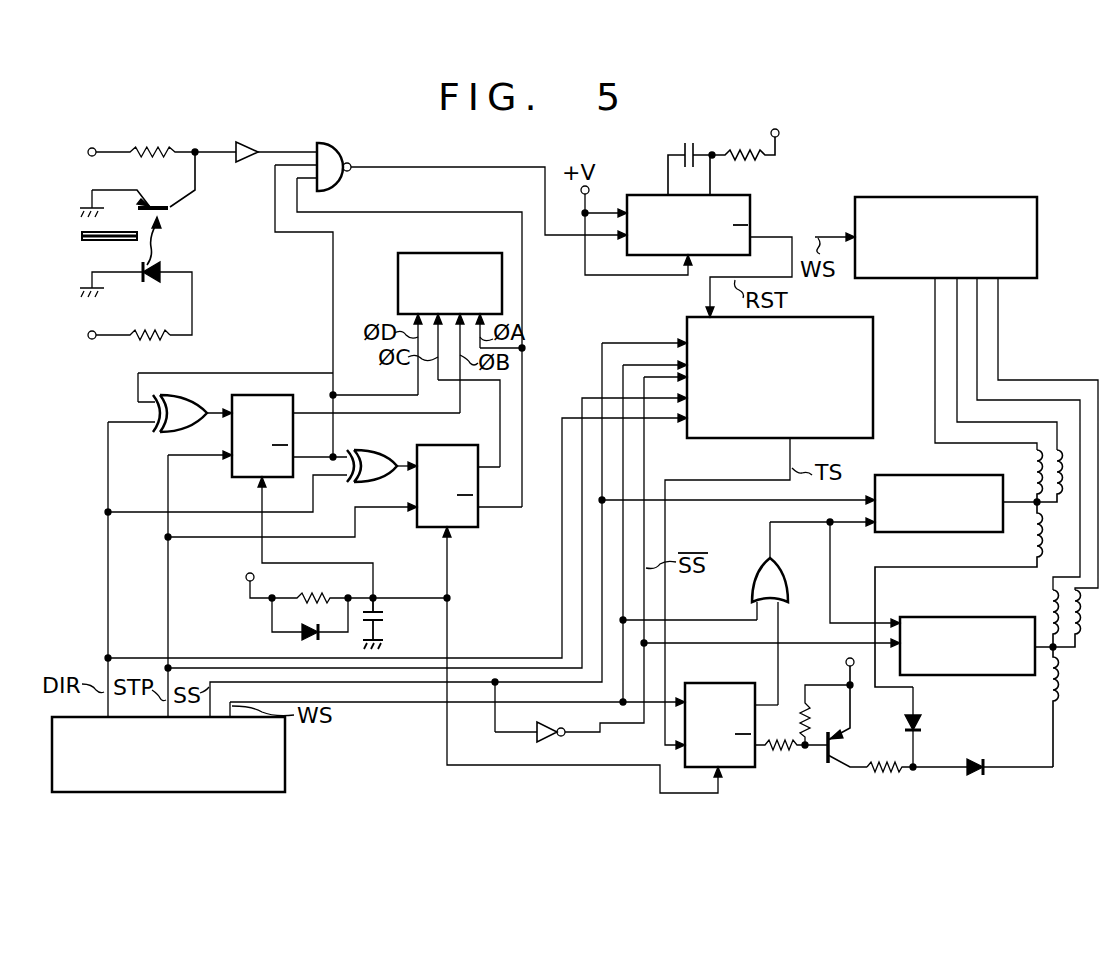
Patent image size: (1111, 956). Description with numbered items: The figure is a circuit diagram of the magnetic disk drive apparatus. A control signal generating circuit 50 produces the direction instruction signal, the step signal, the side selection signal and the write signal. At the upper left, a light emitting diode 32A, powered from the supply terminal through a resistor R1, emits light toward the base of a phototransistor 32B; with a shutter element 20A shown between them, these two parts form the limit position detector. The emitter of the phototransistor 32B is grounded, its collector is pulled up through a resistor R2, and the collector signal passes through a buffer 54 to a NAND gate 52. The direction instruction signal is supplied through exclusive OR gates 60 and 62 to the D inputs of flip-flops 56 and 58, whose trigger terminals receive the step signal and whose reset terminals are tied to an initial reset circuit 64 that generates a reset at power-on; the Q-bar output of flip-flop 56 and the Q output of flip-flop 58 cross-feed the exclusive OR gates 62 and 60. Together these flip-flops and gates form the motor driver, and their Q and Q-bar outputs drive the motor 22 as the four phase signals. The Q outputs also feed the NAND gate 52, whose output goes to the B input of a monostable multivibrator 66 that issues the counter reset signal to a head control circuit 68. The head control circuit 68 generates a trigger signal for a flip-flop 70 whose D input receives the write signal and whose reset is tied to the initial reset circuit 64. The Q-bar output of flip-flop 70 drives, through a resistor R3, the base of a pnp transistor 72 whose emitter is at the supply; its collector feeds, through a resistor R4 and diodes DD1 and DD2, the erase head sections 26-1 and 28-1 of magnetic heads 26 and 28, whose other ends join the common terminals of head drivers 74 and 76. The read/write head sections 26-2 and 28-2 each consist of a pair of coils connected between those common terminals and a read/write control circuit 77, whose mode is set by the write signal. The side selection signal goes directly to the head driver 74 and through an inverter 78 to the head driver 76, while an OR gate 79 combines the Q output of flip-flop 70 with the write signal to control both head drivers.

The shutter/disk (optical interrupter) 20A is at (82, 242).
The motor 22 is at (483, 253).
The magnetic head 26 is at (969, 566).
The erase head section 26-1 is at (1033, 550).
The read/write head section 26-2 is at (1031, 452).
The magnetic head 28 is at (1024, 671).
The erase head section 28-1 is at (1047, 663).
The read/write head section 28-2 is at (1051, 584).
The light emitting diode 32A is at (168, 265).
The phototransistor 32B is at (172, 206).
The control signal generating circuit 50 is at (285, 770).
The NAND gate 52 is at (339, 152).
The buffer 54 is at (246, 142).
The flip-flop 56 is at (232, 395).
The flip-flop 58 is at (455, 448).
The exclusive OR gate 60 is at (182, 422).
The exclusive OR gate 62 is at (372, 452).
The initial reset circuit 64 is at (260, 620).
The monostable multivibrator 66 is at (752, 215).
The head control circuit 68 is at (875, 423).
The flip-flop 70 is at (726, 683).
The pnp transistor 72 is at (818, 761).
The head driver 74 is at (908, 475).
The head driver 76 is at (927, 617).
The read/write control circuit 77 is at (992, 197).
The inverter 78 is at (548, 738).
The OR gate 79 is at (774, 578).
The resistor R1 is at (153, 329).
The resistor R2 is at (155, 148).
The resistor R3 is at (783, 743).
The resistor R4 is at (881, 757).
The diode DD1 is at (916, 715).
The diode DD2 is at (974, 764).